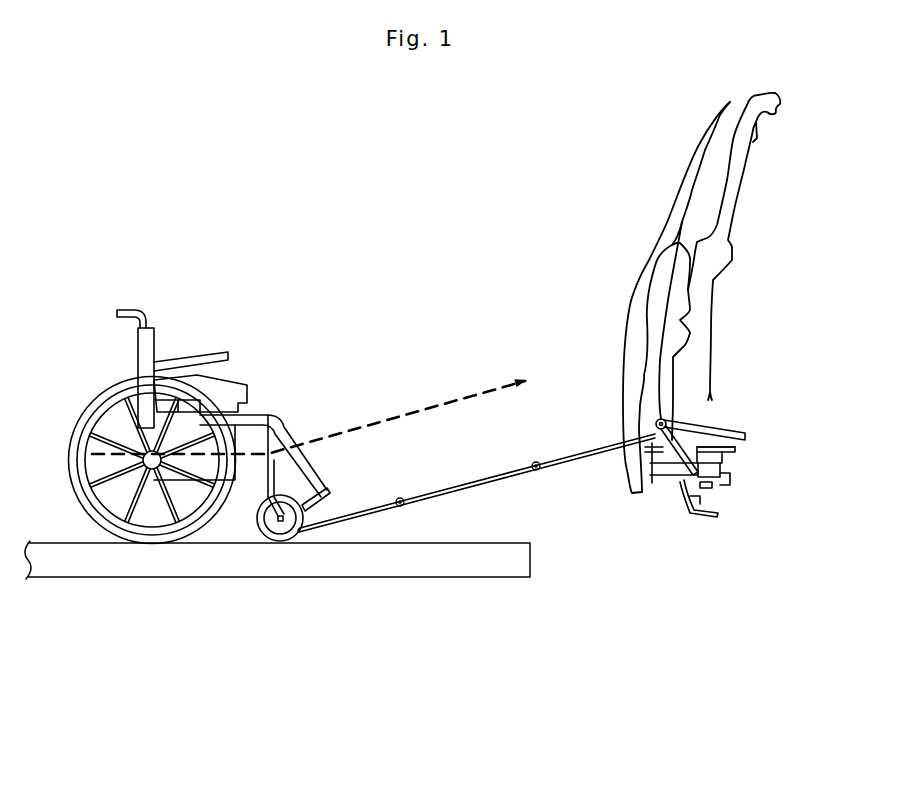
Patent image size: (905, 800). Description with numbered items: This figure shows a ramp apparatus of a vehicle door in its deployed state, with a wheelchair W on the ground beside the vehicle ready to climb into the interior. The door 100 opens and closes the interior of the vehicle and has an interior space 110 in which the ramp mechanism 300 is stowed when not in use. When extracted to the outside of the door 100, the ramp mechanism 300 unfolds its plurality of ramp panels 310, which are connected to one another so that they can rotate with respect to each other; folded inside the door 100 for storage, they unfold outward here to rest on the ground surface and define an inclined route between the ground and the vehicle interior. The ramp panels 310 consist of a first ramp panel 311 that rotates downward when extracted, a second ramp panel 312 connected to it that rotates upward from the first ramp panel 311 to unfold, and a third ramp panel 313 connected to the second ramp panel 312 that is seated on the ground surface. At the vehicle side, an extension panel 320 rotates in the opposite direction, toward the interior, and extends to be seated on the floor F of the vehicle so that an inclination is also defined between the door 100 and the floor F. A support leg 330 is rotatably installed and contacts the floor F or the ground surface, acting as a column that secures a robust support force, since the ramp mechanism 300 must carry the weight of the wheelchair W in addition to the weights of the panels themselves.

The door 100 is at (648, 263).
The interior space 110 is at (655, 321).
The ramp mechanism 300 is at (570, 440).
The ramp panels 310 is at (567, 647).
The first ramp panel 311 is at (575, 456).
The second ramp panel 312 is at (470, 486).
The third ramp panel 313 is at (362, 513).
The extension panel 320 is at (731, 427).
The support leg 330 is at (672, 494).
The wheelchair W is at (206, 405).
The floor F is at (731, 453).